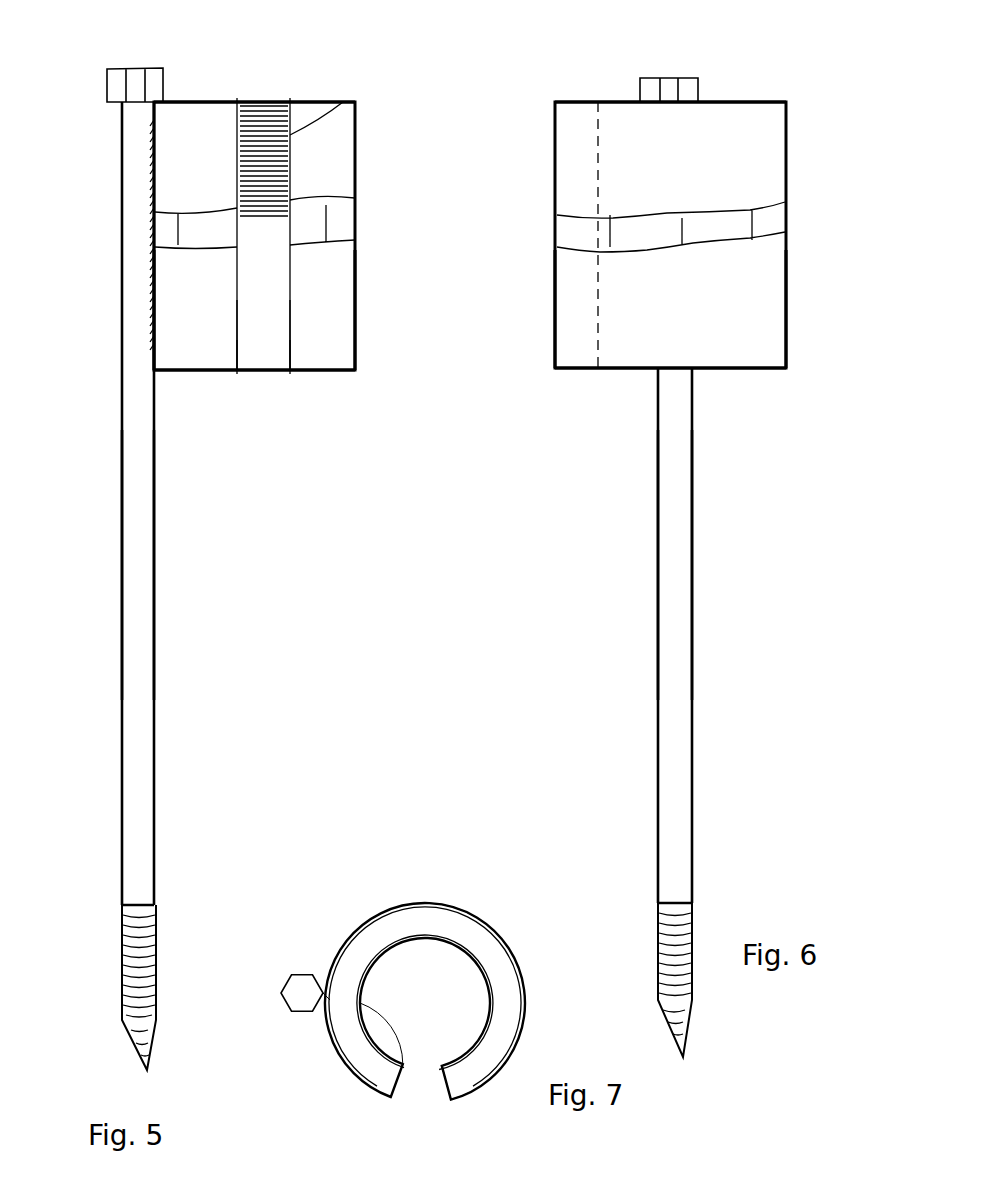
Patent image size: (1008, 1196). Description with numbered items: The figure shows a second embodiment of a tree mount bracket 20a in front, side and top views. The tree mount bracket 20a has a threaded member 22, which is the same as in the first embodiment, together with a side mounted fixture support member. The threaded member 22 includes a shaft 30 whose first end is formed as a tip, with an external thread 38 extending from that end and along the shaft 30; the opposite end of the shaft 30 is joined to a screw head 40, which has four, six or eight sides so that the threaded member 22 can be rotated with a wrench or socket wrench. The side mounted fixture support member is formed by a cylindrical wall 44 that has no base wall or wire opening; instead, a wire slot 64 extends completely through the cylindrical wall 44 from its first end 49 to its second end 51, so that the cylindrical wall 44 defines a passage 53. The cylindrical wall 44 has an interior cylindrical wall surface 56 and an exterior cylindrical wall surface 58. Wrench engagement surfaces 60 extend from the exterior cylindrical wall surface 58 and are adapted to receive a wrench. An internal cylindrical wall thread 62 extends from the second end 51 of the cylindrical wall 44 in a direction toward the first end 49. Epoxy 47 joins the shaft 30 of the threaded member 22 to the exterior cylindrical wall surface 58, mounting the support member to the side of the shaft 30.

In FIG. 5, the tree mount bracket 20a is at (388, 68).
In FIG. 6, the tree mount bracket 20a is at (737, 70).
In FIG. 7, the tree mount bracket 20a is at (457, 880).
In FIG. 5, the threaded member 22 is at (137, 587).
In FIG. 6, the threaded member 22 is at (678, 582).
In FIG. 5, the shaft 30 is at (138, 508).
In FIG. 6, the shaft 30 is at (678, 520).
In FIG. 5, the external thread 38 is at (160, 950).
In FIG. 6, the external thread 38 is at (698, 910).
In FIG. 5, the screw head 40 is at (105, 93).
In FIG. 6, the screw head 40 is at (640, 80).
In FIG. 7, the screw head 40 is at (290, 975).
In FIG. 5, the cylindrical wall 44 is at (345, 332).
In FIG. 6, the cylindrical wall 44 is at (770, 332).
In FIG. 7, the cylindrical wall 44 is at (370, 917).
In FIG. 5, the epoxy 47 is at (150, 237).
In FIG. 7, the epoxy 47 is at (330, 965).
In FIG. 5, the first end 49 is at (327, 370).
In FIG. 6, the first end 49 is at (570, 370).
In FIG. 5, the second end 51 is at (320, 100).
In FIG. 6, the second end 51 is at (772, 98).
In FIG. 7, the second end 51 is at (487, 1067).
In FIG. 5, the passage 53 is at (270, 353).
In FIG. 7, the passage 53 is at (447, 990).
In FIG. 5, the interior cylindrical wall surface 56 is at (250, 125).
In FIG. 7, the interior cylindrical wall surface 56 is at (377, 1007).
In FIG. 5, the exterior cylindrical wall surface 58 is at (352, 287).
In FIG. 6, the exterior cylindrical wall surface 58 is at (775, 277).
In FIG. 7, the exterior cylindrical wall surface 58 is at (397, 903).
In FIG. 5, the wrench engagement surfaces 60 is at (345, 228).
In FIG. 6, the wrench engagement surfaces 60 is at (788, 217).
In FIG. 7, the wrench engagement surfaces 60 is at (530, 965).
In FIG. 5, the internal cylindrical wall thread 62 is at (343, 102).
In FIG. 7, the internal cylindrical wall thread 62 is at (488, 977).
In FIG. 5, the wire slot 64 is at (262, 337).
In FIG. 6, the wire slot 64 is at (582, 282).
In FIG. 7, the wire slot 64 is at (412, 1098).